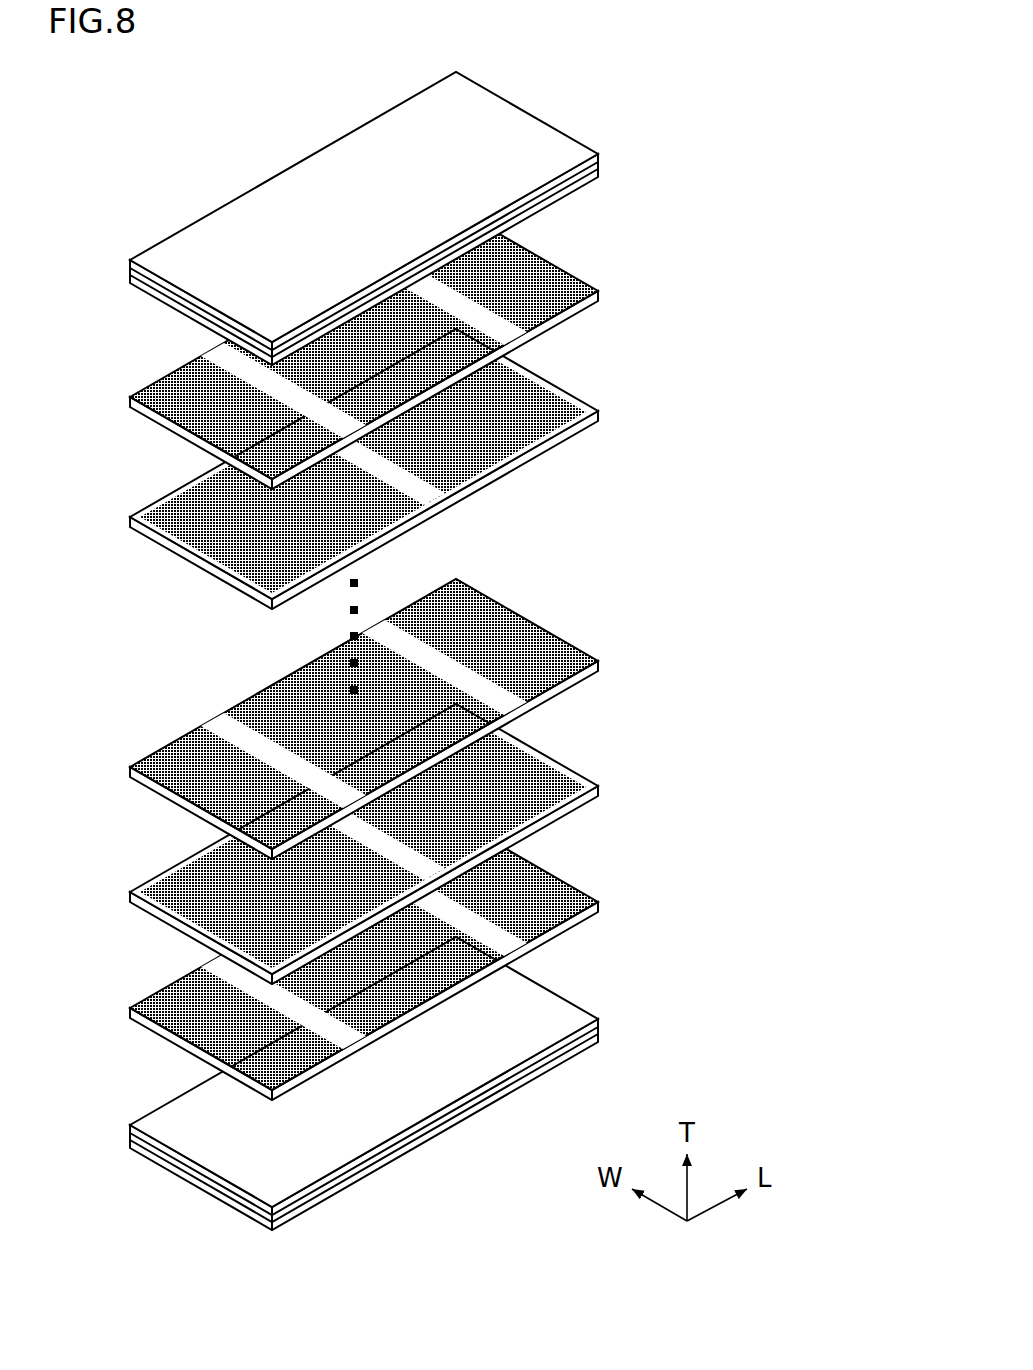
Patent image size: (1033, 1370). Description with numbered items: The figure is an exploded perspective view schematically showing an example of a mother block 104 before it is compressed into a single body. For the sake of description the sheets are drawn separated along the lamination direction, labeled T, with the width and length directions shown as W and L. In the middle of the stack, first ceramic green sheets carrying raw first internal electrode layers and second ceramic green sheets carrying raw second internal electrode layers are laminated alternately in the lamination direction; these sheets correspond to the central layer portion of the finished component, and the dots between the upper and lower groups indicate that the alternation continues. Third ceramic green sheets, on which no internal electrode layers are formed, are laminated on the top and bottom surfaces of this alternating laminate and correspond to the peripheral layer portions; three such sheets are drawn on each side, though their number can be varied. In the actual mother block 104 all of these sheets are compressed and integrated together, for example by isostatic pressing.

The mother block 104 is at (170, 112).